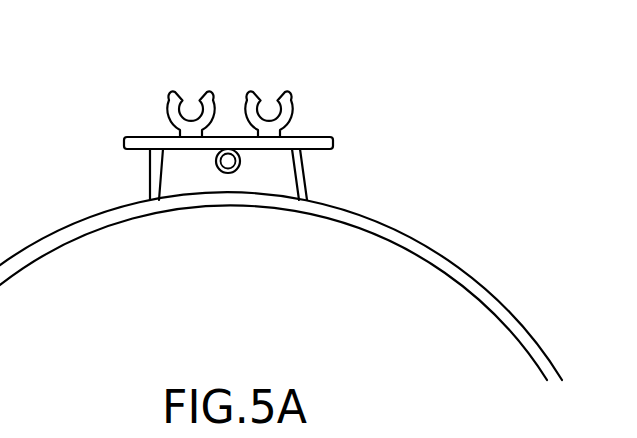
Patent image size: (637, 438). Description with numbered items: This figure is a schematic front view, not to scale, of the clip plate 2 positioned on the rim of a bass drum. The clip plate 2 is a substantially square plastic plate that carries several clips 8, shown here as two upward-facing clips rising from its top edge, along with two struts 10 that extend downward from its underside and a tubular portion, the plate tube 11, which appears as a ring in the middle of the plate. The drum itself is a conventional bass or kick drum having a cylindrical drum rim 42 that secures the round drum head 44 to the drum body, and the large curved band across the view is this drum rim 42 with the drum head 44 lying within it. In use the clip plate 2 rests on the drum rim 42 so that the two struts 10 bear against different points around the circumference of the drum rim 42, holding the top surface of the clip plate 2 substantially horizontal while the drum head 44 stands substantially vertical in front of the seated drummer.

The clip plate 2 is at (327, 136).
The clips 8 is at (175, 90).
The struts 10 is at (150, 173).
The plate tube 11 is at (216, 157).
The drum rim 42 is at (503, 302).
The drum head 44 is at (286, 286).